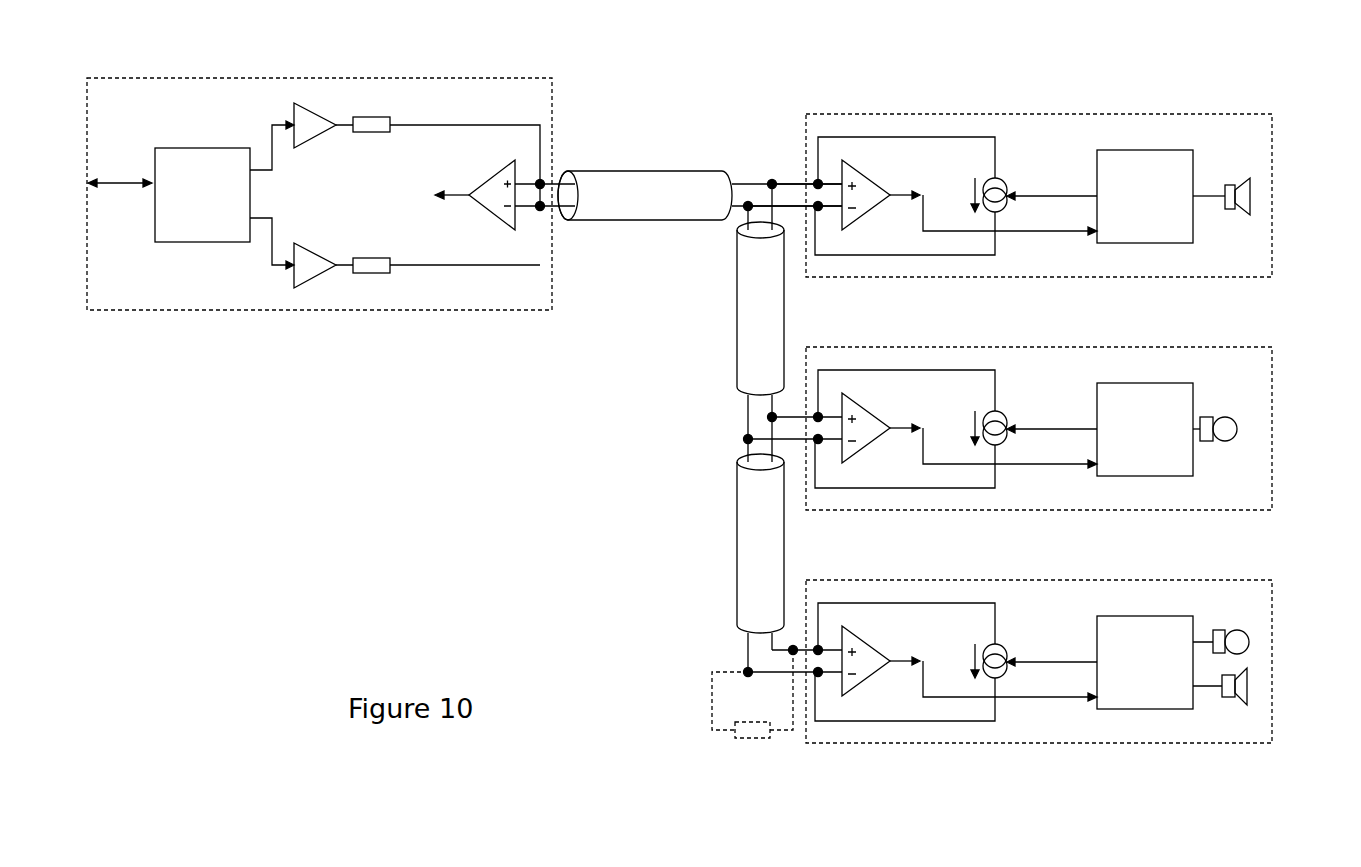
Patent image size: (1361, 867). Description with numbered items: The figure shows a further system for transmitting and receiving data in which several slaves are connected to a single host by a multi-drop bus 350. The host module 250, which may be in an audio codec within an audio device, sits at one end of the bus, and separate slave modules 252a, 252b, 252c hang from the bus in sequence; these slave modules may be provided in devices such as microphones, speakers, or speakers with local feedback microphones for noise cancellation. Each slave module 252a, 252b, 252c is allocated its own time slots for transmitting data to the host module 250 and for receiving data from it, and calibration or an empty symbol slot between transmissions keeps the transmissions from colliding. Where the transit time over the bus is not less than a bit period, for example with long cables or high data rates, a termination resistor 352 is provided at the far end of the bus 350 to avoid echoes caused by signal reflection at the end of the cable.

The host module 250 is at (553, 110).
The slave module 252a is at (1213, 113).
The slave module 252b is at (1213, 346).
The slave module 252c is at (1213, 580).
The multi-drop bus 350 is at (718, 244).
The termination resistor 352 is at (740, 740).